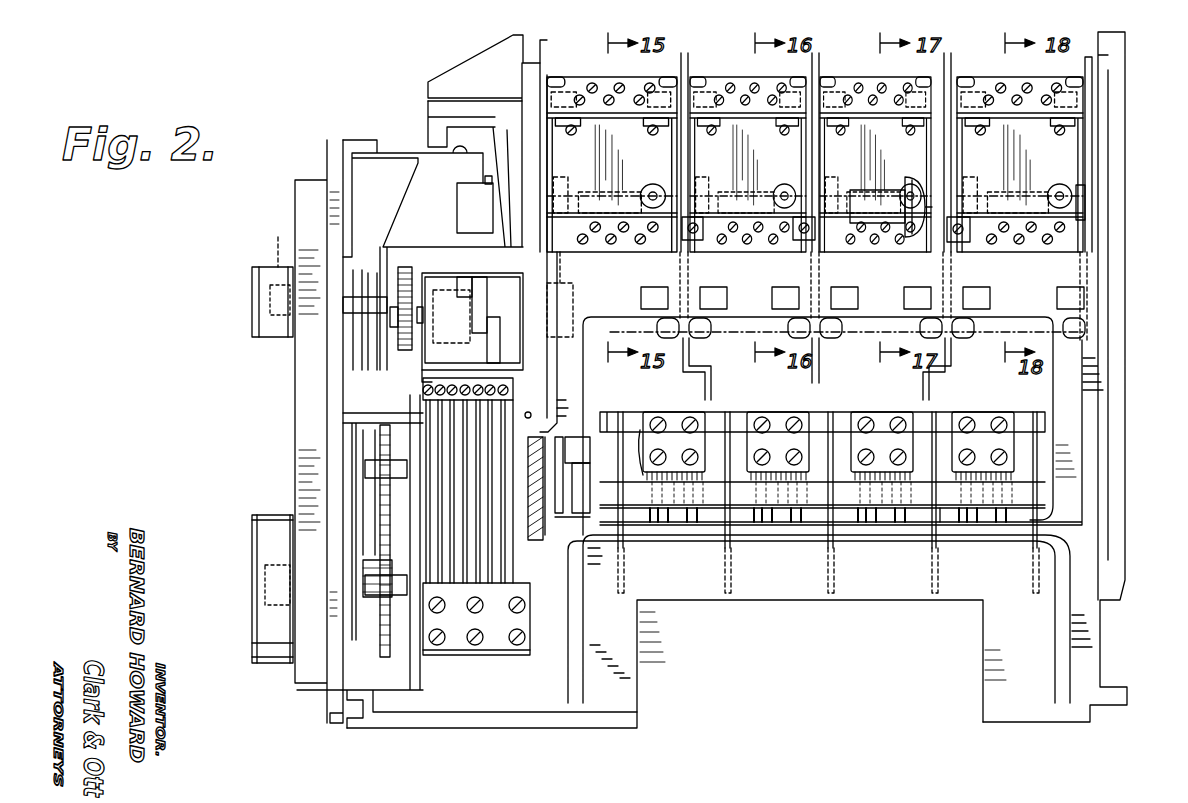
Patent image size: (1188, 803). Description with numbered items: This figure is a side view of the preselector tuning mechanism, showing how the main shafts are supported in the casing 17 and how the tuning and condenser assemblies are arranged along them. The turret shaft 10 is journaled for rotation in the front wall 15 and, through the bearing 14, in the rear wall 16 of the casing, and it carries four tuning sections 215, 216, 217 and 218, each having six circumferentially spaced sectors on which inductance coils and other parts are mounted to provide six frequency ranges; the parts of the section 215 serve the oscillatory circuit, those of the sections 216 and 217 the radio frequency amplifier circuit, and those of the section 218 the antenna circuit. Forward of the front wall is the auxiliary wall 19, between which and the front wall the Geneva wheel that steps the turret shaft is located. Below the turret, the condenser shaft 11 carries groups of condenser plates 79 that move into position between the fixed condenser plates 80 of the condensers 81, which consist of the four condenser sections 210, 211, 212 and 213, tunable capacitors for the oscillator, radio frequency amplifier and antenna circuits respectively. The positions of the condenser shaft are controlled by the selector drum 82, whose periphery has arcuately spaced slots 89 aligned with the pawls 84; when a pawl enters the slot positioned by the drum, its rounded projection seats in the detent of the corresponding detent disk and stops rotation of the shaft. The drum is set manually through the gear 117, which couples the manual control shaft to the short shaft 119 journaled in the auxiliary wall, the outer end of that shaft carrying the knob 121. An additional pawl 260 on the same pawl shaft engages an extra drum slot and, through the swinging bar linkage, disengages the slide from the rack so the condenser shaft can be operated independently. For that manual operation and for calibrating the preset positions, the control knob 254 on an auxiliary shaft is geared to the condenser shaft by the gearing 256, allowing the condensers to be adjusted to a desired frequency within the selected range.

The turret shaft 10 is at (878, 195).
The condenser shaft 11 is at (745, 498).
The bearing 14 is at (1090, 205).
The front wall 15 is at (533, 153).
The rear wall 16 is at (1097, 150).
The casing 17 is at (1120, 243).
The auxiliary wall 19 is at (420, 677).
The condenser plates 79 is at (697, 520).
The fixed condenser plates 80 is at (648, 476).
The condensers 81 is at (712, 470).
The selector drum 82 is at (551, 275).
The pawls 84 is at (490, 555).
The slots 89 is at (498, 292).
The gear 117 is at (398, 335).
The short shaft 119 is at (274, 250).
The knob 121 is at (252, 300).
The condenser section 210 is at (676, 428).
The condenser section 211 is at (780, 430).
The condenser section 212 is at (880, 430).
The condenser section 213 is at (980, 430).
The tuning section 215 is at (603, 78).
The tuning section 216 is at (750, 80).
The tuning section 217 is at (878, 80).
The tuning section 218 is at (1028, 80).
The control knob 254 is at (252, 568).
The gearing 256 is at (375, 652).
The additional pawl 260 is at (540, 578).